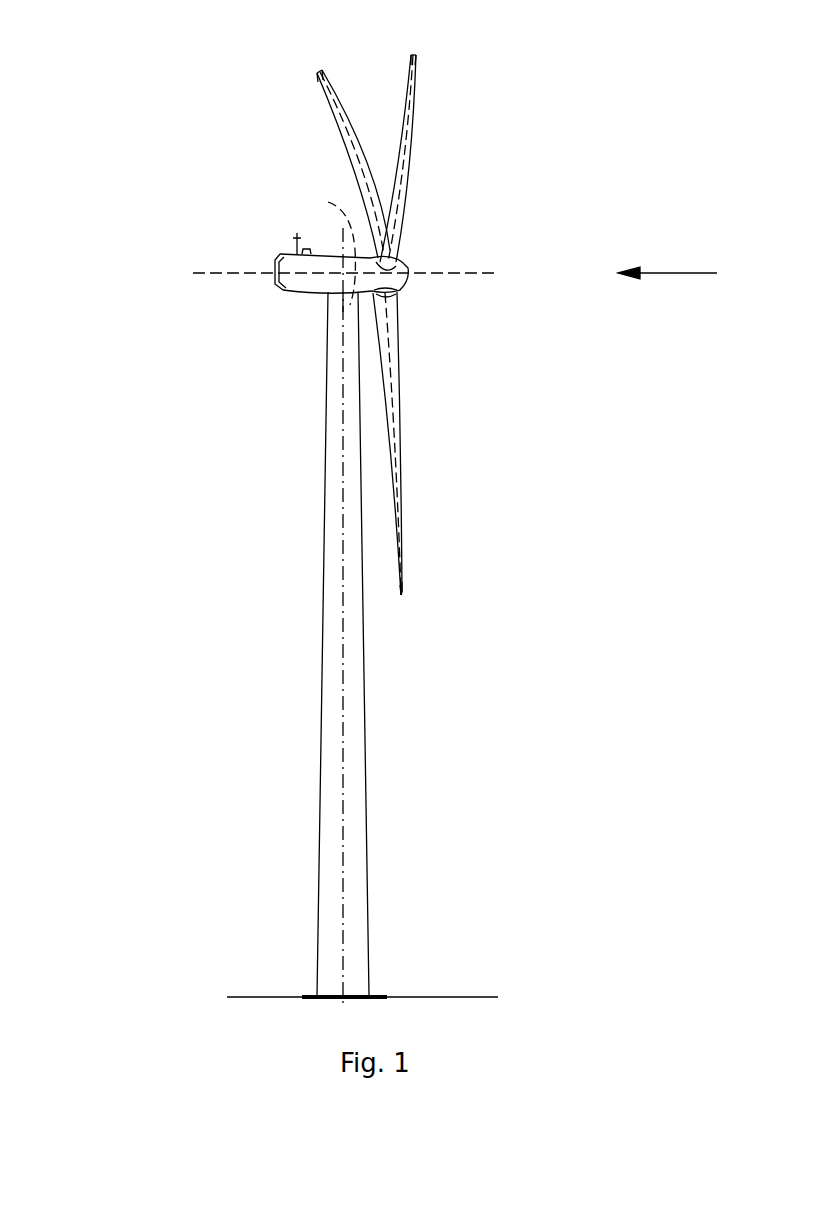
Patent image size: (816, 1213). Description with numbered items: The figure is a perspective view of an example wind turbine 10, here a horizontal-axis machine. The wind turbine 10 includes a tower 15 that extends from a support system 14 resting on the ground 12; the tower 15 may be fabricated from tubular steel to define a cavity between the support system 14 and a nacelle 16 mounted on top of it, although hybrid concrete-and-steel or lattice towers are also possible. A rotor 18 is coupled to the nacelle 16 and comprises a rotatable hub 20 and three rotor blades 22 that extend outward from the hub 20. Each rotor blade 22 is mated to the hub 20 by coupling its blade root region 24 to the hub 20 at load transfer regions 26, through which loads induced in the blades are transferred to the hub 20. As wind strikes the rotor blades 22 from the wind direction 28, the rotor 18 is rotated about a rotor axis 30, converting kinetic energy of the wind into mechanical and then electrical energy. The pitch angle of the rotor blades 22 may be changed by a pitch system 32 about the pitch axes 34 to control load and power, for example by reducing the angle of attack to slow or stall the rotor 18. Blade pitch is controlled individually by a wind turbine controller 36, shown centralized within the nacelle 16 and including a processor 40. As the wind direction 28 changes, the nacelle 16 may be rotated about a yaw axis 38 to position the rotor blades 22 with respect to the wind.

The wind turbine 10 is at (121, 76).
The ground 12 is at (248, 996).
The support system 14 is at (308, 995).
The tower 15 is at (337, 621).
The nacelle 16 is at (300, 292).
The rotor 18 is at (420, 181).
The rotatable hub 20 is at (405, 266).
The rotor blade 22 is at (378, 325).
The blade root region 24 is at (400, 370).
The load transfer regions 26 is at (398, 291).
The wind direction 28 is at (685, 272).
The rotor axis 30 is at (470, 273).
The pitch system 32 is at (372, 318).
The pitch axes 34 is at (312, 75).
The wind turbine controller 36 is at (345, 303).
The yaw axis 38 is at (346, 686).
The processor 40 is at (325, 246).